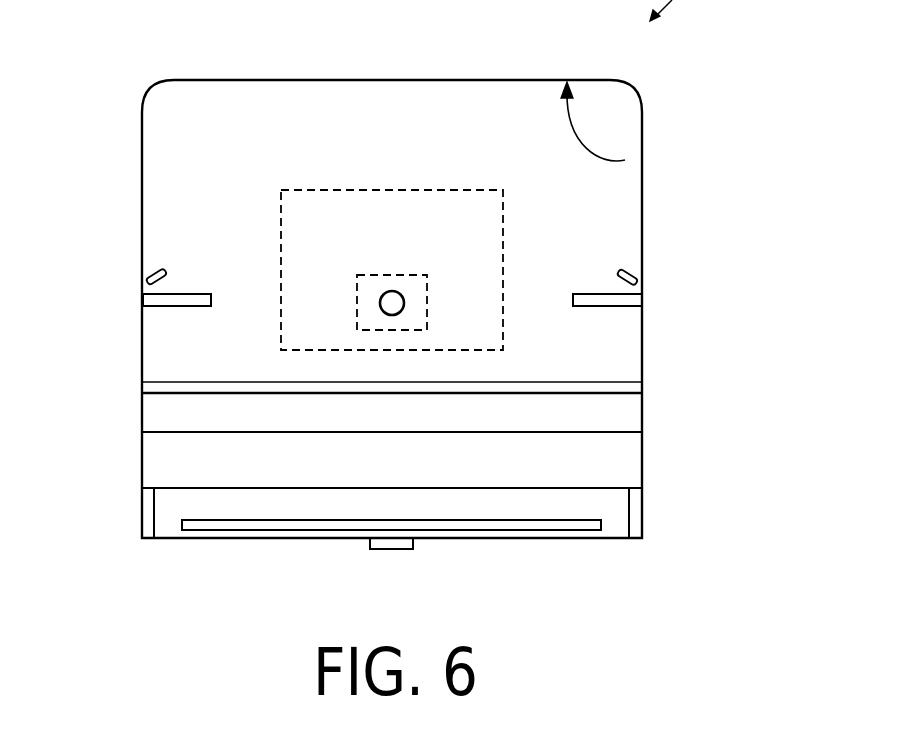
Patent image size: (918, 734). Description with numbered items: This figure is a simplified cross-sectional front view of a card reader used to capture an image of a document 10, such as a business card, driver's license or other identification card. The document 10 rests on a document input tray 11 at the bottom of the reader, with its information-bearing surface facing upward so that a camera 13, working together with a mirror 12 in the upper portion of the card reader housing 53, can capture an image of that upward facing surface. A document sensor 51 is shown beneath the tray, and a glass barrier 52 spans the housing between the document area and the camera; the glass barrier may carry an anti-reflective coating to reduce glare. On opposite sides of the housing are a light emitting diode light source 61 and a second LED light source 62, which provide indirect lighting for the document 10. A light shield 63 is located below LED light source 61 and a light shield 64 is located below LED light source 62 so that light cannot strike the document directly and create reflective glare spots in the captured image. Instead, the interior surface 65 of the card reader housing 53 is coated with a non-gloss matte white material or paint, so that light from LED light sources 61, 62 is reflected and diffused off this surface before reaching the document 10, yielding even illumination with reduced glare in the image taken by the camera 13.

The document 10 is at (523, 531).
The document input tray 11 is at (616, 531).
The mirror 12 is at (437, 190).
The camera 13 is at (380, 273).
The document sensor 51 is at (398, 550).
The glass barrier 52 is at (640, 383).
The card reader housing 53 is at (248, 80).
The LED light source 61 is at (153, 273).
The LED light source 62 is at (633, 268).
The light shield 63 is at (165, 306).
The light shield 64 is at (618, 307).
The interior surface 65 is at (625, 160).